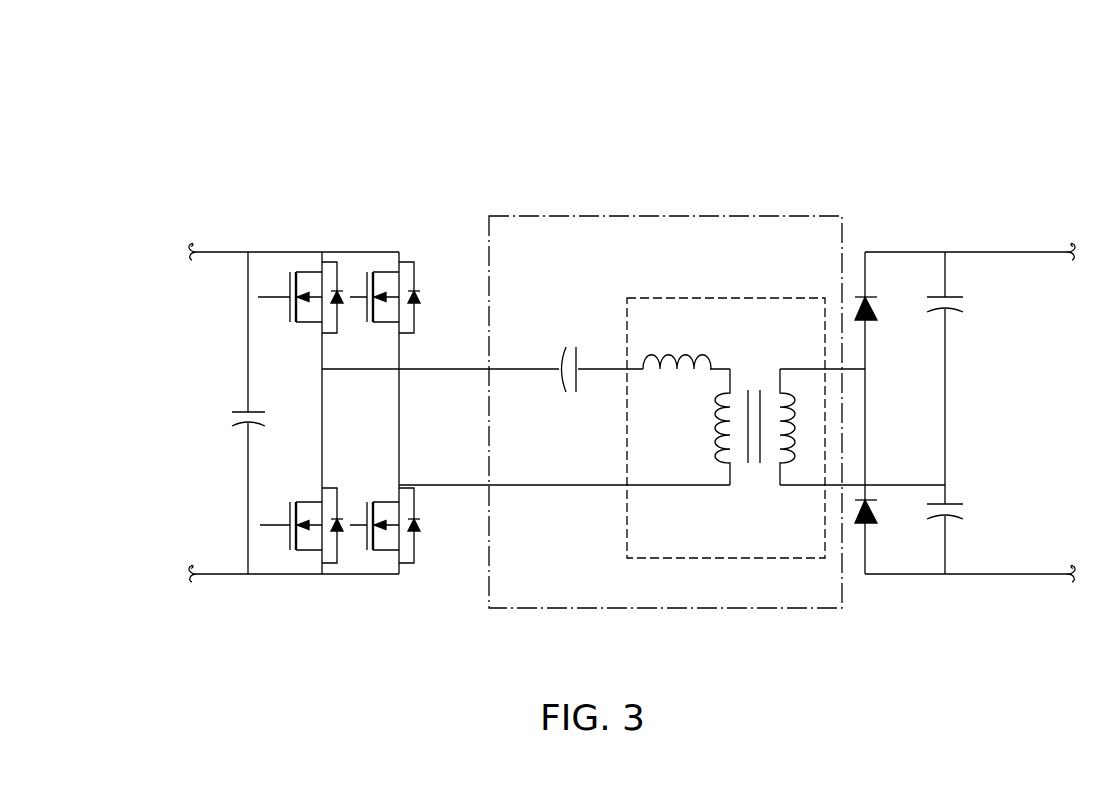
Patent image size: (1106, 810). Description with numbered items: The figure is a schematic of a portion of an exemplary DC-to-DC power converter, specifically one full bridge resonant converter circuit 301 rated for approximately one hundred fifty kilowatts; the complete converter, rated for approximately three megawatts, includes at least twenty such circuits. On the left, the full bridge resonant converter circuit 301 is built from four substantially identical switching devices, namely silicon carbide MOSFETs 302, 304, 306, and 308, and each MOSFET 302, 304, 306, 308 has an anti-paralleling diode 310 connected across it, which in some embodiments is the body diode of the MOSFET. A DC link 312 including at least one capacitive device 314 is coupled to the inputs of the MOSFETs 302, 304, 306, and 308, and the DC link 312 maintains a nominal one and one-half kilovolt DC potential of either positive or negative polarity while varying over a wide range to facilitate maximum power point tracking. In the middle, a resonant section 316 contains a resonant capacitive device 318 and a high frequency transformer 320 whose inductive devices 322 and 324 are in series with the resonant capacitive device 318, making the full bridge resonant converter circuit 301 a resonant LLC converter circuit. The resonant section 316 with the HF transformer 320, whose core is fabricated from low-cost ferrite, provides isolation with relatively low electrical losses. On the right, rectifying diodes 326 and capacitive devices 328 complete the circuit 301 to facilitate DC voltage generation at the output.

The full bridge resonant converter circuit 301 is at (343, 178).
The MOSFET 302 is at (299, 290).
The MOSFET 304 is at (378, 533).
The MOSFET 306 is at (377, 288).
The MOSFET 308 is at (302, 533).
The anti-paralleling diode 310 is at (420, 296).
The DC link 312 is at (219, 357).
The capacitive device 314 is at (236, 422).
The resonant section 316 is at (681, 216).
The resonant capacitive device 318 is at (564, 346).
The high frequency transformer 320 is at (693, 297).
The inductive device 322 is at (665, 382).
The inductive device 324 is at (714, 412).
The rectifying diode 326 is at (878, 300).
The capacitive device 328 is at (965, 299).